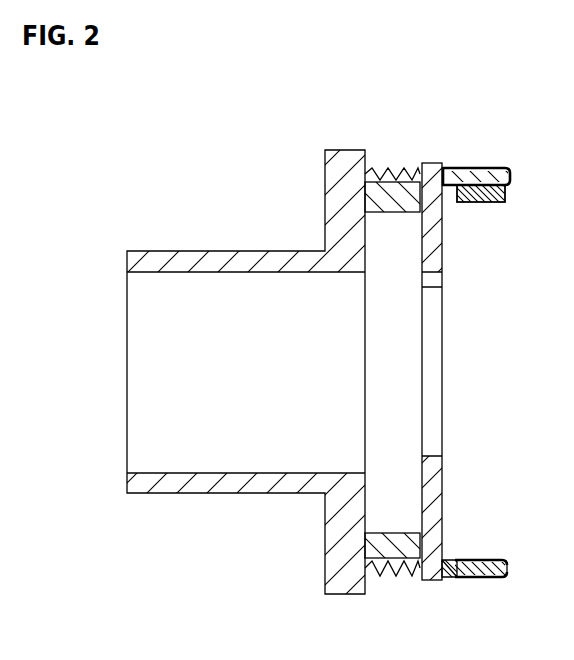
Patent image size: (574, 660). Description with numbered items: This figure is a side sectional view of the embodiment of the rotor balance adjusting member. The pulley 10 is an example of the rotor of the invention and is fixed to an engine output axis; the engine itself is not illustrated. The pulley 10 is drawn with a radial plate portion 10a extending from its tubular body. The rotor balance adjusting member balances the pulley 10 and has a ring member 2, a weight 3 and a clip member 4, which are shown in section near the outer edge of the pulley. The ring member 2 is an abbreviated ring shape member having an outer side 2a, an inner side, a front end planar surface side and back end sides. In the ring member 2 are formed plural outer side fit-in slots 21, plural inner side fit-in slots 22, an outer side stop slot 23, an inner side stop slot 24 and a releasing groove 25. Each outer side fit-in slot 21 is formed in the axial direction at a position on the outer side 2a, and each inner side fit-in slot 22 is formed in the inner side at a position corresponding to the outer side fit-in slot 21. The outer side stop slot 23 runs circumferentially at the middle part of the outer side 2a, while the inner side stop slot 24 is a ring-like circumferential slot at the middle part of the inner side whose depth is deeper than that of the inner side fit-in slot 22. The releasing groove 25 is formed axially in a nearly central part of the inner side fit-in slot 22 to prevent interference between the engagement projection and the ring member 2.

The pulley 10 is at (345, 132).
The flange plate of joint body 10a is at (442, 468).
The ring member 2 is at (287, 330).
The outer side 2a is at (470, 578).
The weight 3 is at (482, 202).
The clip member 4 is at (497, 168).
The outer side fit-in slot 21 is at (493, 578).
The inner side fit-in slot 22 is at (502, 560).
The outer side stop slot 23 is at (451, 578).
The inner side stop slot 24 is at (460, 560).
The releasing groove 25 is at (471, 560).